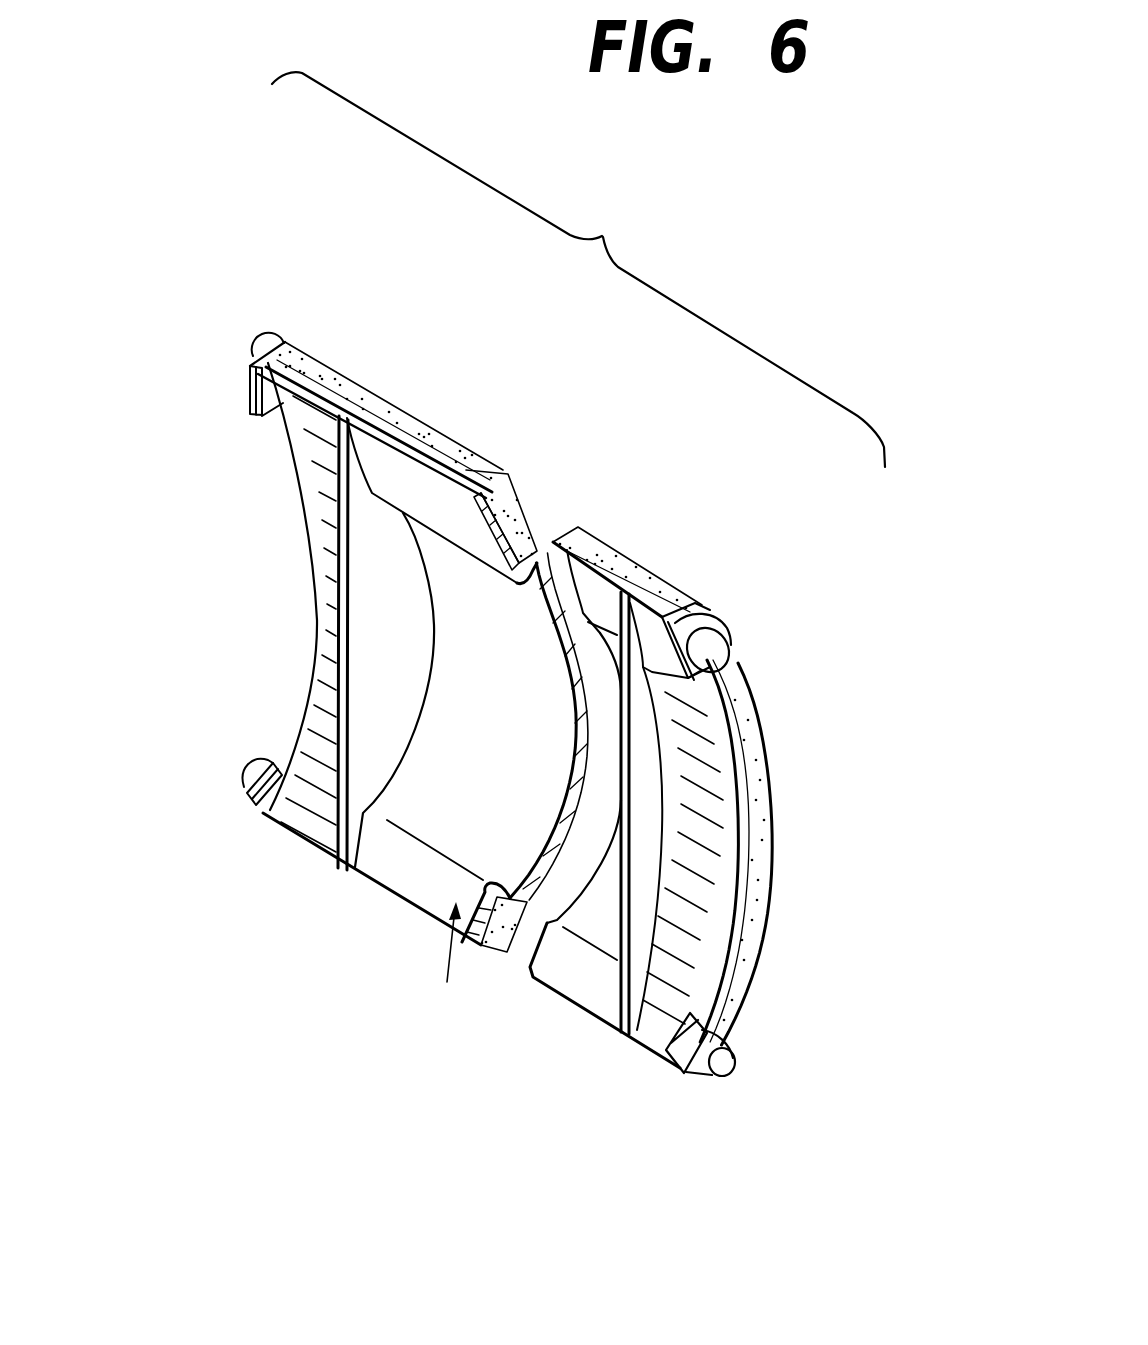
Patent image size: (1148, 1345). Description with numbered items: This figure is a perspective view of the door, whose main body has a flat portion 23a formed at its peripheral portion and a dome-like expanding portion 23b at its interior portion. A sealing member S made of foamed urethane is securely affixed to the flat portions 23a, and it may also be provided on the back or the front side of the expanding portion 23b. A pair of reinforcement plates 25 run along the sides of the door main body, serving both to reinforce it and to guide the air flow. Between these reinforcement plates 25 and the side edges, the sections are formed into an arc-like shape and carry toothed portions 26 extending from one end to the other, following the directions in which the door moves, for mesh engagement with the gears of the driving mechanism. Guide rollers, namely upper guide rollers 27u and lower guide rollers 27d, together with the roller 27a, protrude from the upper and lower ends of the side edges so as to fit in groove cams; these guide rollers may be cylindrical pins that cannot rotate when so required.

The flat portion 23a is at (463, 505).
The expanding portion 23b is at (515, 748).
The reinforcement plate 25 is at (337, 835).
The toothed portion 26 is at (313, 600).
The upper guide roller 27u is at (270, 335).
The lower-left support pin 27a is at (250, 770).
The lower guide roller 27d is at (690, 1080).
The sealing member S is at (434, 425).